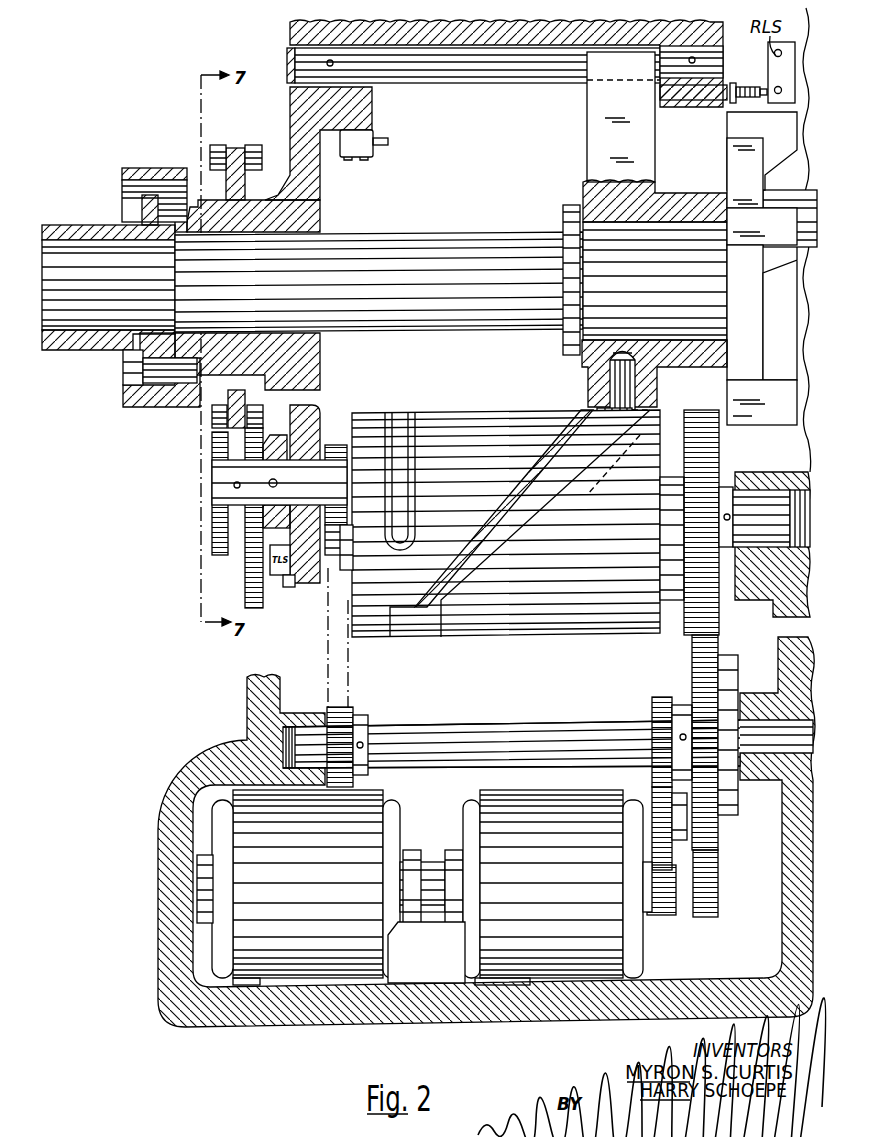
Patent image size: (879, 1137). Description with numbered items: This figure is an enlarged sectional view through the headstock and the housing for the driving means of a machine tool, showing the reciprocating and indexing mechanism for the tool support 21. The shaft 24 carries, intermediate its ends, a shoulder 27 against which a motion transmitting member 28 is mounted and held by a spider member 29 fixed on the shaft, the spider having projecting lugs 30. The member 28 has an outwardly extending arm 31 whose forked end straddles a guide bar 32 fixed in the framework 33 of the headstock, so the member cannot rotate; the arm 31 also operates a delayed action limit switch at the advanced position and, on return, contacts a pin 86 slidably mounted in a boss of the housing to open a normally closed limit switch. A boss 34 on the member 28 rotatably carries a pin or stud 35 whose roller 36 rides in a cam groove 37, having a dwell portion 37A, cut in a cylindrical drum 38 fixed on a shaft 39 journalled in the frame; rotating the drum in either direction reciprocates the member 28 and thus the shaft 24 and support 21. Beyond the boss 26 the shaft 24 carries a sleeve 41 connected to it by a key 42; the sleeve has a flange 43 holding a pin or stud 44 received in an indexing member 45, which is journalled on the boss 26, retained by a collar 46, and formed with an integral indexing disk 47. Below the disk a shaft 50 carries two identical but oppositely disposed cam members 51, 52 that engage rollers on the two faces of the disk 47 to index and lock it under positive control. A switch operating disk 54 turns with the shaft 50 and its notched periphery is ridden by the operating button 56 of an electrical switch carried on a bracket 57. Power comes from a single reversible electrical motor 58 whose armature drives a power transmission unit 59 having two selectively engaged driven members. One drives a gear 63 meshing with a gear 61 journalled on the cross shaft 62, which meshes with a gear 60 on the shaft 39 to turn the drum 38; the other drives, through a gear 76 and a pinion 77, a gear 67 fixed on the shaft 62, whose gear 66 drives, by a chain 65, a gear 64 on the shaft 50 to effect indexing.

The tool support 21 is at (489, 224).
The shaft 24 is at (398, 242).
The boss 26 is at (266, 201).
The shoulder 27 is at (570, 205).
The motion transmitting member 28 is at (672, 204).
The spider member 29 is at (735, 152).
The projecting lugs 30 is at (758, 426).
The arm 31 is at (598, 125).
The guide bar 32 is at (488, 84).
The framework 33 is at (292, 102).
The boss 34 is at (597, 380).
The pin or stud 35 is at (627, 388).
The roller 36 is at (600, 418).
The cam groove 37 is at (427, 610).
The dwell portion 37A is at (409, 436).
The cylindrical drum 38 is at (484, 422).
The shaft 39 is at (757, 513).
The sleeve 41 is at (72, 230).
The key 42 is at (82, 343).
The flange 43 is at (140, 200).
The pin or stud 44 is at (125, 380).
The indexing member 45 is at (177, 400).
The collar 46 is at (183, 220).
The indexing disk 47 is at (238, 147).
The shaft 50 is at (303, 447).
The cam member 51 is at (212, 546).
The cam member 52 is at (252, 588).
The switch operating disk 54 is at (276, 435).
The operating button 56 is at (337, 583).
The bracket 57 is at (292, 587).
The reversible electrical motor 58 is at (357, 830).
The power transmission unit 59 is at (452, 815).
The gear 60 is at (719, 612).
The gear 61 is at (708, 660).
The cross shaft 62 is at (505, 735).
The gear 63 is at (710, 917).
The gear 64 is at (340, 442).
The chain 65 is at (350, 680).
The gear 66 is at (346, 710).
The gear 67 is at (660, 698).
The gear 76 is at (664, 917).
The pinion 77 is at (655, 800).
The pin 86 is at (745, 86).